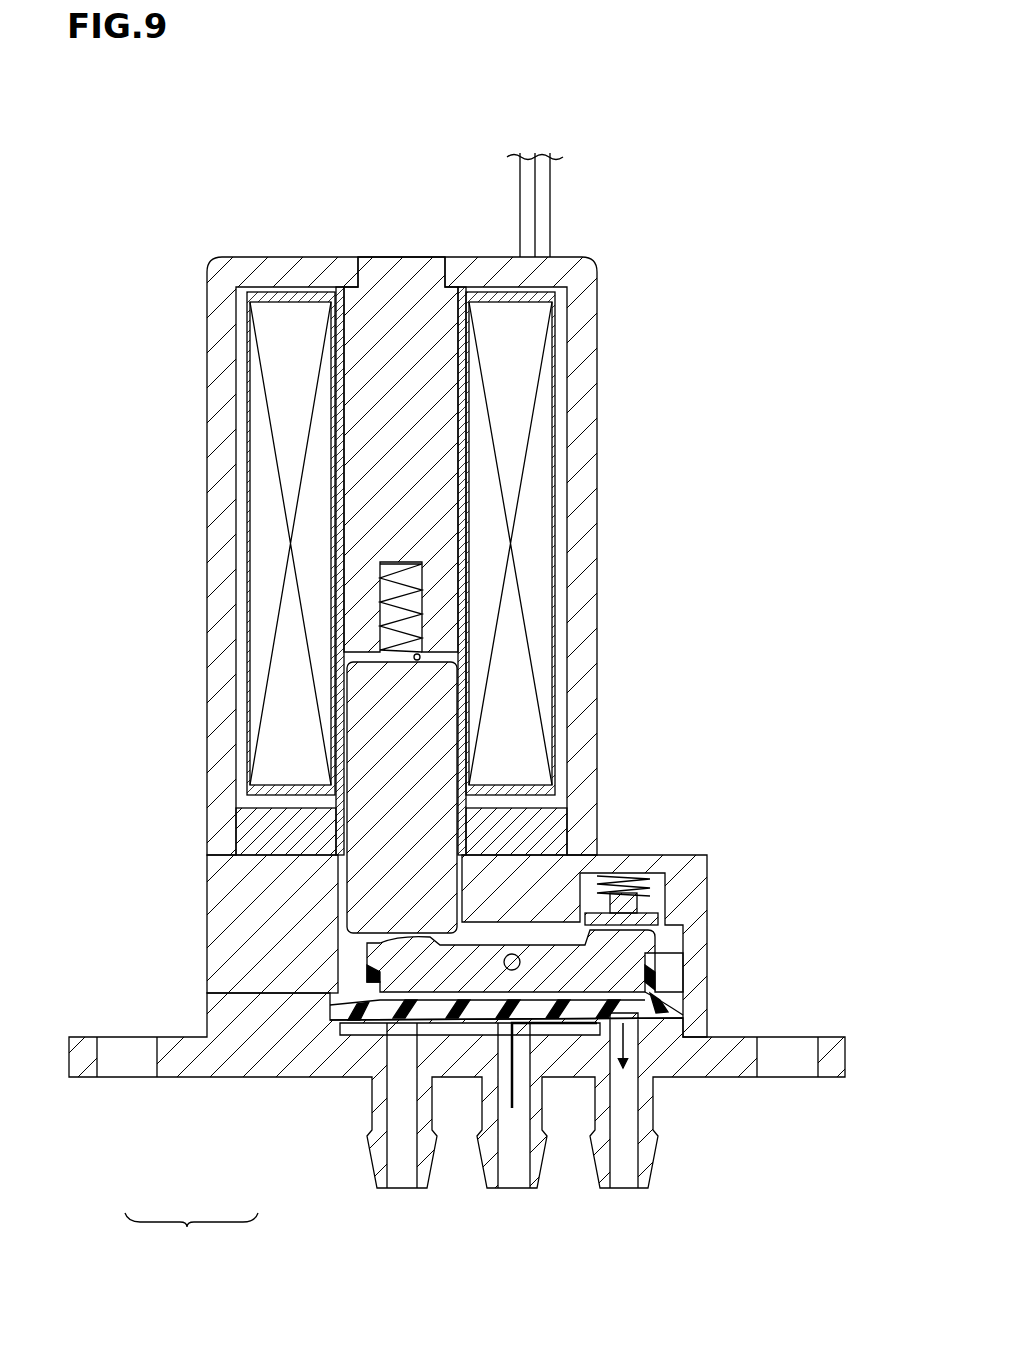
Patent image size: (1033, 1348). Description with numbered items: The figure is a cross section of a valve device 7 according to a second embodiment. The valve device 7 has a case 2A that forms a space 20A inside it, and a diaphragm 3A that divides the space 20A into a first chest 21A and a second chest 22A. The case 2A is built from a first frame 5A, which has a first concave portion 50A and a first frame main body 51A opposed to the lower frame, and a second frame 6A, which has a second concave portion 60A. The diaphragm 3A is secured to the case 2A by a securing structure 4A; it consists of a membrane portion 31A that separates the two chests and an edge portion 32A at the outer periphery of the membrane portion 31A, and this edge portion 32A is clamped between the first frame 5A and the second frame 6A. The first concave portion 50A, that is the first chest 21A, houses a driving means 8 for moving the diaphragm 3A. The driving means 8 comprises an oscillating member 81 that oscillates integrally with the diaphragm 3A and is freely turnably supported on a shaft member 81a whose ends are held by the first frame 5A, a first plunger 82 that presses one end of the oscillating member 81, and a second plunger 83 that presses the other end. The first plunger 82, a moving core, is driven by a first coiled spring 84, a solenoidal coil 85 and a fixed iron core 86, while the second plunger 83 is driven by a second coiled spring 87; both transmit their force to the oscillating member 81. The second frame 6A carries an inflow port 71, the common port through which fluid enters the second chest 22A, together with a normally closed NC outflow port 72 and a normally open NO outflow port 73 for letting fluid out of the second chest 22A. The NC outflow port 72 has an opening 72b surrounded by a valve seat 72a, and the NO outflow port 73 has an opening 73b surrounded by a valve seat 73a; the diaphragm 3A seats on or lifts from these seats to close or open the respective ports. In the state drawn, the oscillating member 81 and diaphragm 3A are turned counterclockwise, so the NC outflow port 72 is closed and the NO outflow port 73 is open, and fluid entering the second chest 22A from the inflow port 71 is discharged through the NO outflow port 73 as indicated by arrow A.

The valve device 7 is at (793, 141).
The driving means 8 is at (512, 702).
The fixed iron core 86 is at (372, 372).
The solenoidal coil 85 is at (288, 435).
The first coiled spring 84 is at (380, 562).
The first plunger 82 is at (372, 745).
The first frame 5A is at (250, 880).
The first frame main body 51A is at (250, 930).
The case 2A is at (452, 1013).
The second frame 6A is at (235, 1030).
The space 20A is at (237, 1128).
The first chest 21A is at (255, 1072).
The second chest 22A is at (350, 990).
The oscillating member 81 is at (480, 964).
The shaft member 81a is at (512, 954).
The edge portion 32A is at (327, 1007).
The securing structure 4A is at (656, 883).
The first concave portion 50A is at (668, 945).
The second plunger 83 is at (627, 895).
The second coiled spring 87 is at (642, 880).
The diaphragm 3A is at (743, 1064).
The membrane portion 31A is at (660, 960).
The arrow A is at (665, 1012).
The NC outflow port 72 is at (401, 1151).
The valve seat 72a is at (443, 1028).
The opening 72b is at (380, 1090).
The inflow port 71 is at (522, 1155).
The second concave portion 60A is at (473, 1090).
The NO outflow port 73 is at (598, 1151).
The valve seat 73a is at (585, 1050).
The opening 73b is at (605, 1060).